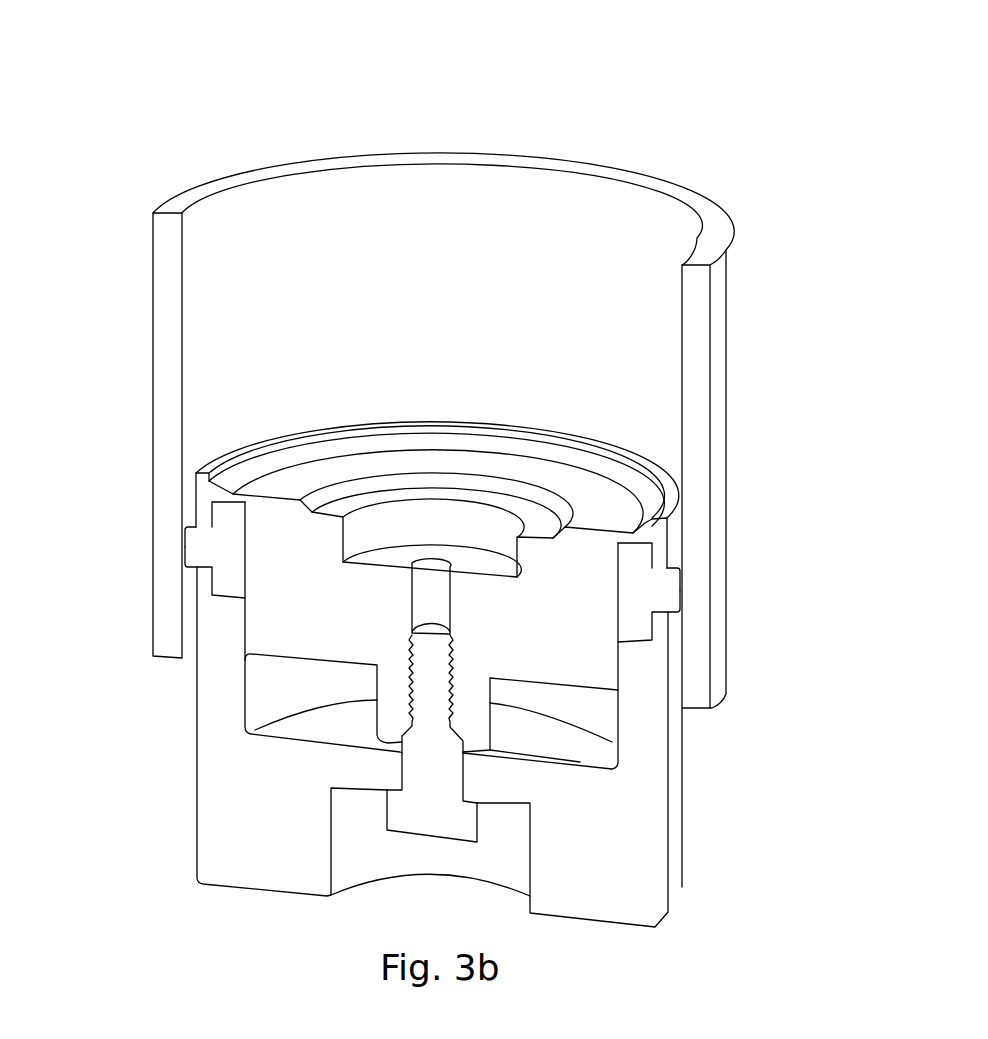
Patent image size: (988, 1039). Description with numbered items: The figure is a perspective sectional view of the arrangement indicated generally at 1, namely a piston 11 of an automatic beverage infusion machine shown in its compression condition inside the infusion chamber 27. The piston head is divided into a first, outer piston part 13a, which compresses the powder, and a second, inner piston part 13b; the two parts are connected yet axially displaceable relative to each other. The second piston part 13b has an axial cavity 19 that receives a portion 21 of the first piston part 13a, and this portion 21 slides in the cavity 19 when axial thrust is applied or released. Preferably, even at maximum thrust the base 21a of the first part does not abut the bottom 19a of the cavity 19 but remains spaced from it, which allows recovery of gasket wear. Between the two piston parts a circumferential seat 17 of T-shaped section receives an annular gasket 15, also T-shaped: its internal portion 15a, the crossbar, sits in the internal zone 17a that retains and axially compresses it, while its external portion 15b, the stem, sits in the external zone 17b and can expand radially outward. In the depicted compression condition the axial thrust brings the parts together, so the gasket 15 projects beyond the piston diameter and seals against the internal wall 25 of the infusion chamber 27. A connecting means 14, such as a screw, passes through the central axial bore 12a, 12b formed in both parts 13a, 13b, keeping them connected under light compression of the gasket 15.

The piston-cylinder unit 1 is at (643, 133).
The piston 11 is at (720, 793).
The central axial bore 12a is at (437, 575).
The central axial bore 12b is at (543, 770).
The first, outer piston part 13a is at (332, 612).
The second, inner piston part 13b is at (267, 823).
The connecting means 14 is at (433, 695).
The annular gasket 15 is at (232, 527).
The internal portion 15a is at (235, 583).
The external portion 15b is at (197, 546).
The circumferential seat 17 is at (618, 593).
The internal zone 17a is at (647, 553).
The external zone 17b is at (660, 610).
The axial cavity 19 is at (583, 708).
The bottom 19a is at (353, 732).
The portion 21 is at (590, 665).
The base 21a is at (573, 770).
The internal wall 25 is at (443, 285).
The infusion chamber 27 is at (690, 312).